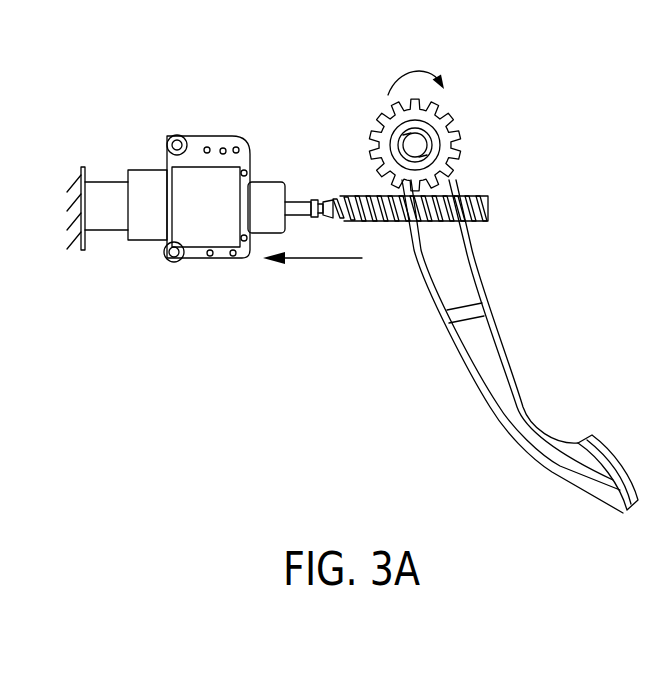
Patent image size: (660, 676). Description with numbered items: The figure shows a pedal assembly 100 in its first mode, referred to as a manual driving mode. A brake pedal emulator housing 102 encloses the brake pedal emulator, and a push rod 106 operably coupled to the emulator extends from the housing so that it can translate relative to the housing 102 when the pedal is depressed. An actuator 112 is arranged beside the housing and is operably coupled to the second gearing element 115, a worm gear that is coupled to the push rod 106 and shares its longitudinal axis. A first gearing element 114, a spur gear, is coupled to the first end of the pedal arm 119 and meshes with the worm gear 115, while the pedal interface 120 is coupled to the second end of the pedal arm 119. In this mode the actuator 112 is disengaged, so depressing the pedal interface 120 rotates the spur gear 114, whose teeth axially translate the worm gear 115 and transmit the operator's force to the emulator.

The pedal assembly 100 is at (152, 115).
The brake pedal emulator housing 102 is at (202, 240).
The push rod 106 is at (296, 201).
The actuator 112 is at (260, 237).
The first gearing element 114 is at (447, 123).
The second gearing element 115 is at (483, 193).
The pedal arm 119 is at (497, 333).
The pedal interface 120 is at (597, 440).